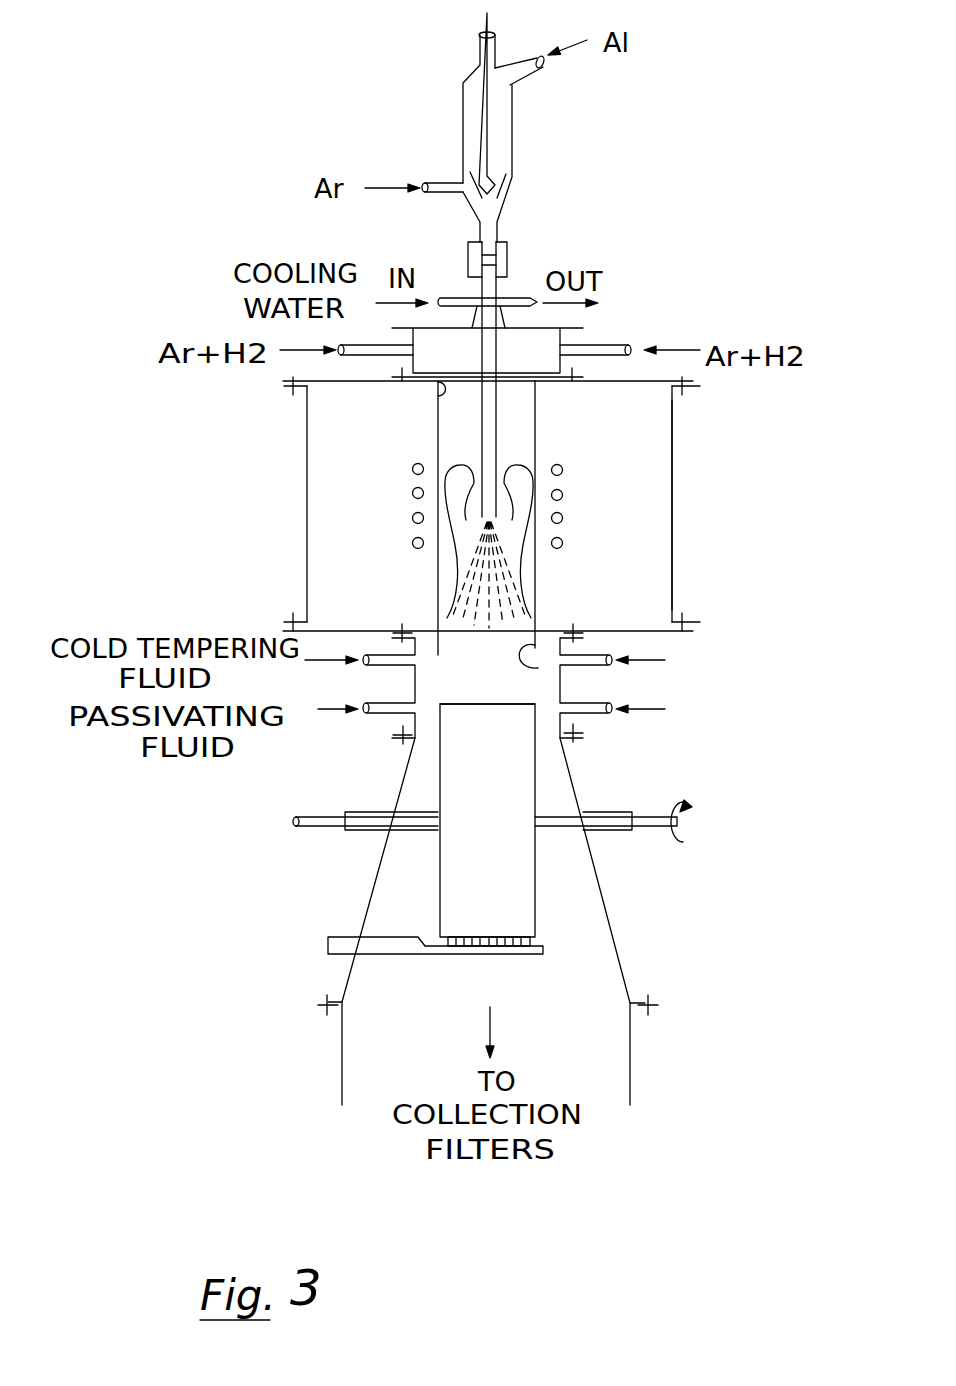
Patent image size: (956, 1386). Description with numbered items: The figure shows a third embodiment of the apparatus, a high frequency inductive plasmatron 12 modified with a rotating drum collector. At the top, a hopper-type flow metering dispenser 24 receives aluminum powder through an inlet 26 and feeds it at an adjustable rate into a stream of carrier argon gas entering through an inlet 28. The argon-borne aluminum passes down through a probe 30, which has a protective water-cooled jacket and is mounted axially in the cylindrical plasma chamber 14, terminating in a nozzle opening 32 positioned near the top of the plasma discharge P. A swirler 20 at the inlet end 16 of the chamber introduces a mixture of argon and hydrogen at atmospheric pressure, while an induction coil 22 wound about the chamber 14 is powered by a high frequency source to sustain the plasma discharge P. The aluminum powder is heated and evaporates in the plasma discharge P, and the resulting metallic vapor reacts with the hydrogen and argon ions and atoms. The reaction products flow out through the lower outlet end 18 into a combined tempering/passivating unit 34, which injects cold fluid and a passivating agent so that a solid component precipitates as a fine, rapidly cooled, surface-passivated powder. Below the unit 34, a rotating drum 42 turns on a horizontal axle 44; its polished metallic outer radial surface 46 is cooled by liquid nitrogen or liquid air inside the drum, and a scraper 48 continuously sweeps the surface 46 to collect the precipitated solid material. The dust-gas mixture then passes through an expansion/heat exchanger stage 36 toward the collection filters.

The HFI plasmatron 12 is at (307, 502).
The plasma chamber 14 is at (535, 586).
The inlet end 16 is at (438, 392).
The lower outlet end 18 is at (540, 667).
The swirler 20 is at (585, 330).
The induction coil 22 is at (412, 469).
The hopper-type flow metering dispenser 24 is at (513, 128).
The aluminum powder inlet 26 is at (522, 62).
The carrier argon gas inlet 28 is at (445, 182).
The probe 30 is at (496, 425).
The nozzle opening 32 is at (466, 516).
The tempering/passivating unit 34 is at (563, 697).
The expansion/heat exchanger stage 36 is at (605, 907).
The rotating drum 42 is at (438, 785).
The horizontal axle 44 is at (320, 828).
The outer radial surface 46 is at (470, 703).
The scraper 48 is at (523, 954).
The plasma discharge P is at (457, 477).